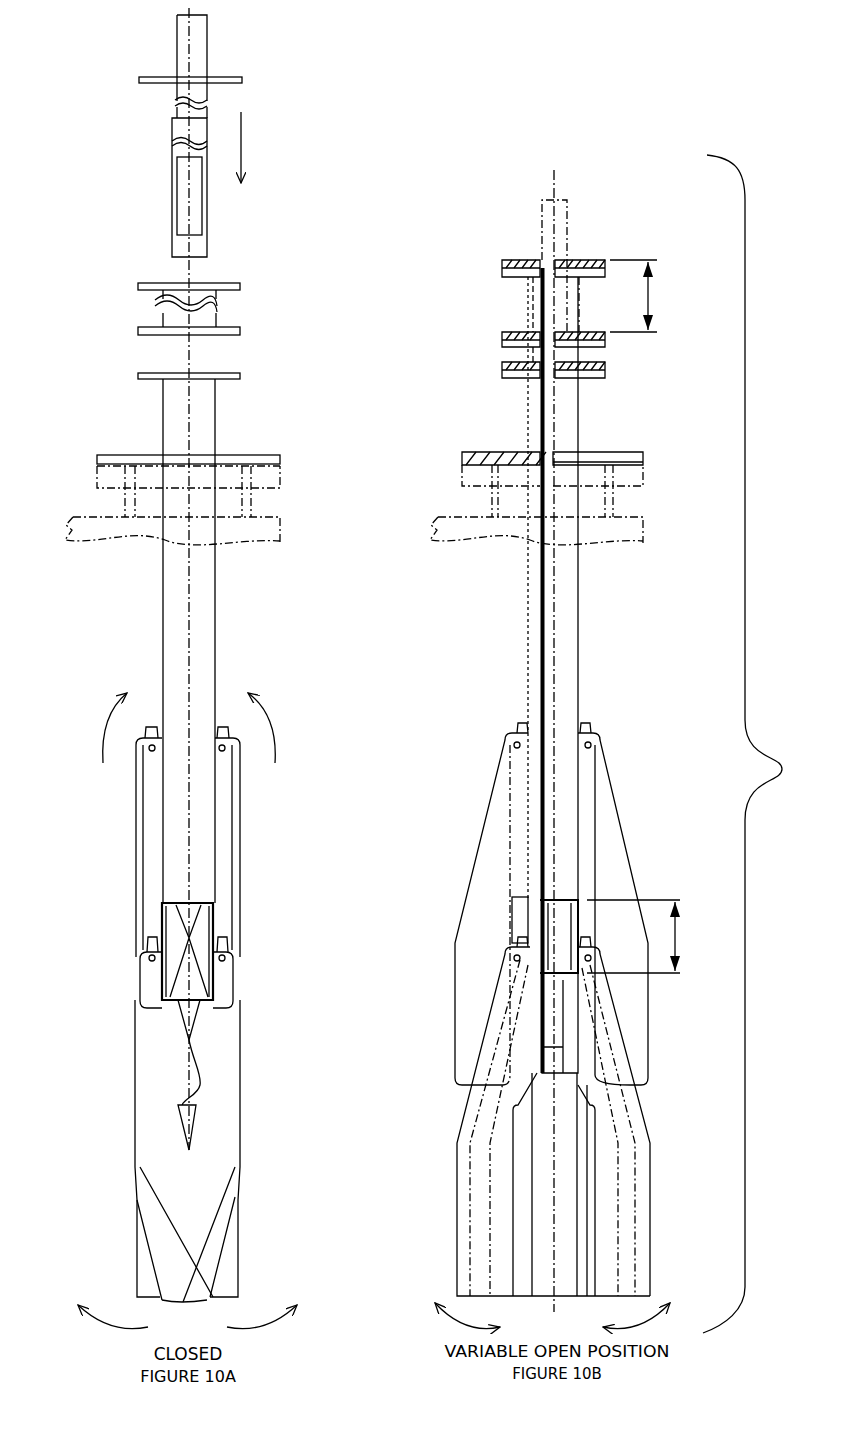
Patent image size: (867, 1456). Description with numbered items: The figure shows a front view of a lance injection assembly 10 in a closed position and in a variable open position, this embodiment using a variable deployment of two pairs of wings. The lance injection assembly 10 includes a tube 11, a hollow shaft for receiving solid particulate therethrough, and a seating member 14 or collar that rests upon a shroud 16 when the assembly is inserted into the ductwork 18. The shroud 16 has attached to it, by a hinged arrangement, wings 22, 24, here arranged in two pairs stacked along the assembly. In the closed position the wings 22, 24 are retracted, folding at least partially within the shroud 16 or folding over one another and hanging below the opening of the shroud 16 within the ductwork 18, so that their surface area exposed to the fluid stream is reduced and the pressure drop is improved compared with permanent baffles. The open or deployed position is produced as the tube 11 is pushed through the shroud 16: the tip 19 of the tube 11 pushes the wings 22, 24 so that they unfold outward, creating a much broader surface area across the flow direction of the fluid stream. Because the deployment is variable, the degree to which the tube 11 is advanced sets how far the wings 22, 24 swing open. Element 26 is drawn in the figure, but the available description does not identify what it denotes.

In FIG. 10B, the lance injection assembly 10 is at (760, 744).
In FIG. 10A, the tube 11 is at (177, 48).
In FIG. 10A, the seating member 14 is at (243, 78).
In FIG. 10A, the shroud 16 is at (217, 415).
In FIG. 10B, the shroud 16 is at (527, 600).
In FIG. 10A, the ductwork 18 is at (278, 475).
In FIG. 10A, the tip 19 is at (207, 225).
In FIG. 10A, the wing 22 is at (136, 848).
In FIG. 10B, the wing 22 is at (478, 837).
In FIG. 10A, the wing 24 is at (240, 845).
In FIG. 10B, the wing 24 is at (618, 805).
In FIG. 10A, the spring assembly 26 is at (243, 323).